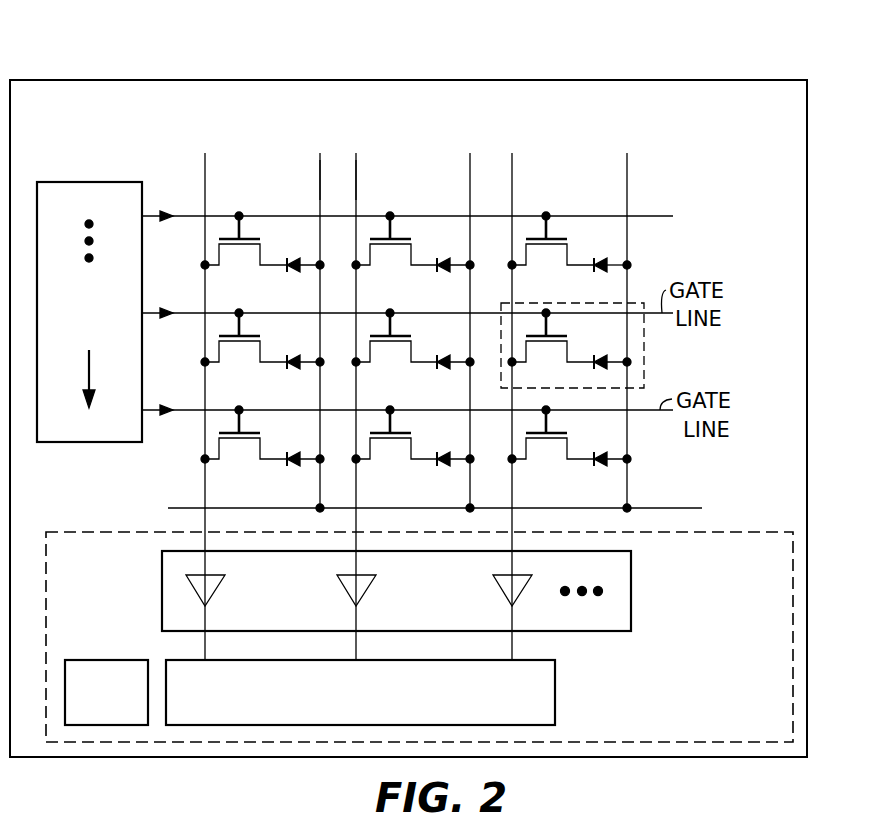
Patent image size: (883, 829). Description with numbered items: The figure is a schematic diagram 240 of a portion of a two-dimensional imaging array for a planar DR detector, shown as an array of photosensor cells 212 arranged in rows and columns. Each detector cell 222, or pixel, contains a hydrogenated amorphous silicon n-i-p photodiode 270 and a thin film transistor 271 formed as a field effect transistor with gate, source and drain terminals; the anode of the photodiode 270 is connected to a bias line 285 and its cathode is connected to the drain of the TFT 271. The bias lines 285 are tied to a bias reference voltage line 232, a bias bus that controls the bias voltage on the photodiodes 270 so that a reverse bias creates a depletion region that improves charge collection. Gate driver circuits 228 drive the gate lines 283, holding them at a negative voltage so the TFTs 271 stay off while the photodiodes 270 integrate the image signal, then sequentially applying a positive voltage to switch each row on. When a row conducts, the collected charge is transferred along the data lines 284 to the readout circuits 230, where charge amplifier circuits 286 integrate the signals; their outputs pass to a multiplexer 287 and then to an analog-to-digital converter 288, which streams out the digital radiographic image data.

The schematic diagram 240 is at (812, 70).
The array of photosensor cells 212 is at (666, 140).
The gate driver circuits 228 is at (76, 182).
The thin film transistor 271 is at (556, 236).
The photodiode 270 is at (606, 258).
The gate line 283 is at (662, 216).
The detector cell 222 is at (645, 365).
The bias reference voltage line 232 is at (700, 488).
The bias line 285 is at (307, 108).
The data line 284 is at (368, 108).
The charge amplifier circuits 286 is at (632, 587).
The multiplexer 287 is at (556, 694).
The analog-to-digital converter 288 is at (107, 660).
The readout circuits 230 is at (795, 652).